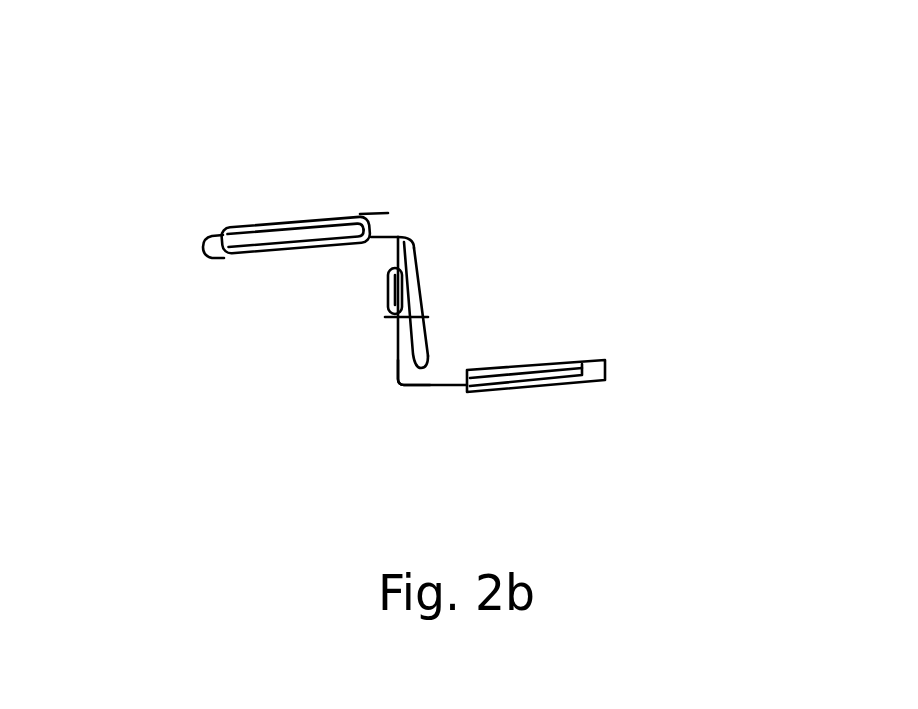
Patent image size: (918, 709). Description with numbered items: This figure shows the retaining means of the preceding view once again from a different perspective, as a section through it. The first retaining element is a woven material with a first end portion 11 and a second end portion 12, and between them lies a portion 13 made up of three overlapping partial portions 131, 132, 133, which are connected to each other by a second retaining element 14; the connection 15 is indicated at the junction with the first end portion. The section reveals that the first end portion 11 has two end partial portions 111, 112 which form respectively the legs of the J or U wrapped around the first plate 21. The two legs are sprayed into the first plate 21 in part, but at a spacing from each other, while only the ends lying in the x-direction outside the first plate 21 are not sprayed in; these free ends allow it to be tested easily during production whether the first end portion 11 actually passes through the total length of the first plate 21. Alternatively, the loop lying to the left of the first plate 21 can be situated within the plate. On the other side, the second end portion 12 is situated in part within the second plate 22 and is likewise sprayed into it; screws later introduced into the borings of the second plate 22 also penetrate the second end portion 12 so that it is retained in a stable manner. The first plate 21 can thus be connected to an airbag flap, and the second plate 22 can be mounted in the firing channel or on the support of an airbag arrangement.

The first end portion 11 is at (241, 237).
The end partial portion 111 is at (277, 222).
The end partial portion 112 is at (292, 254).
The first plate 21 is at (257, 258).
The connection 15 is at (404, 235).
The portion 13 is at (408, 302).
The partial portion 131 is at (394, 370).
The partial portion 132 is at (395, 345).
The partial portion 133 is at (420, 293).
The second retaining element 14 is at (437, 313).
The second end portion 12 is at (503, 383).
The second plate 22 is at (557, 362).